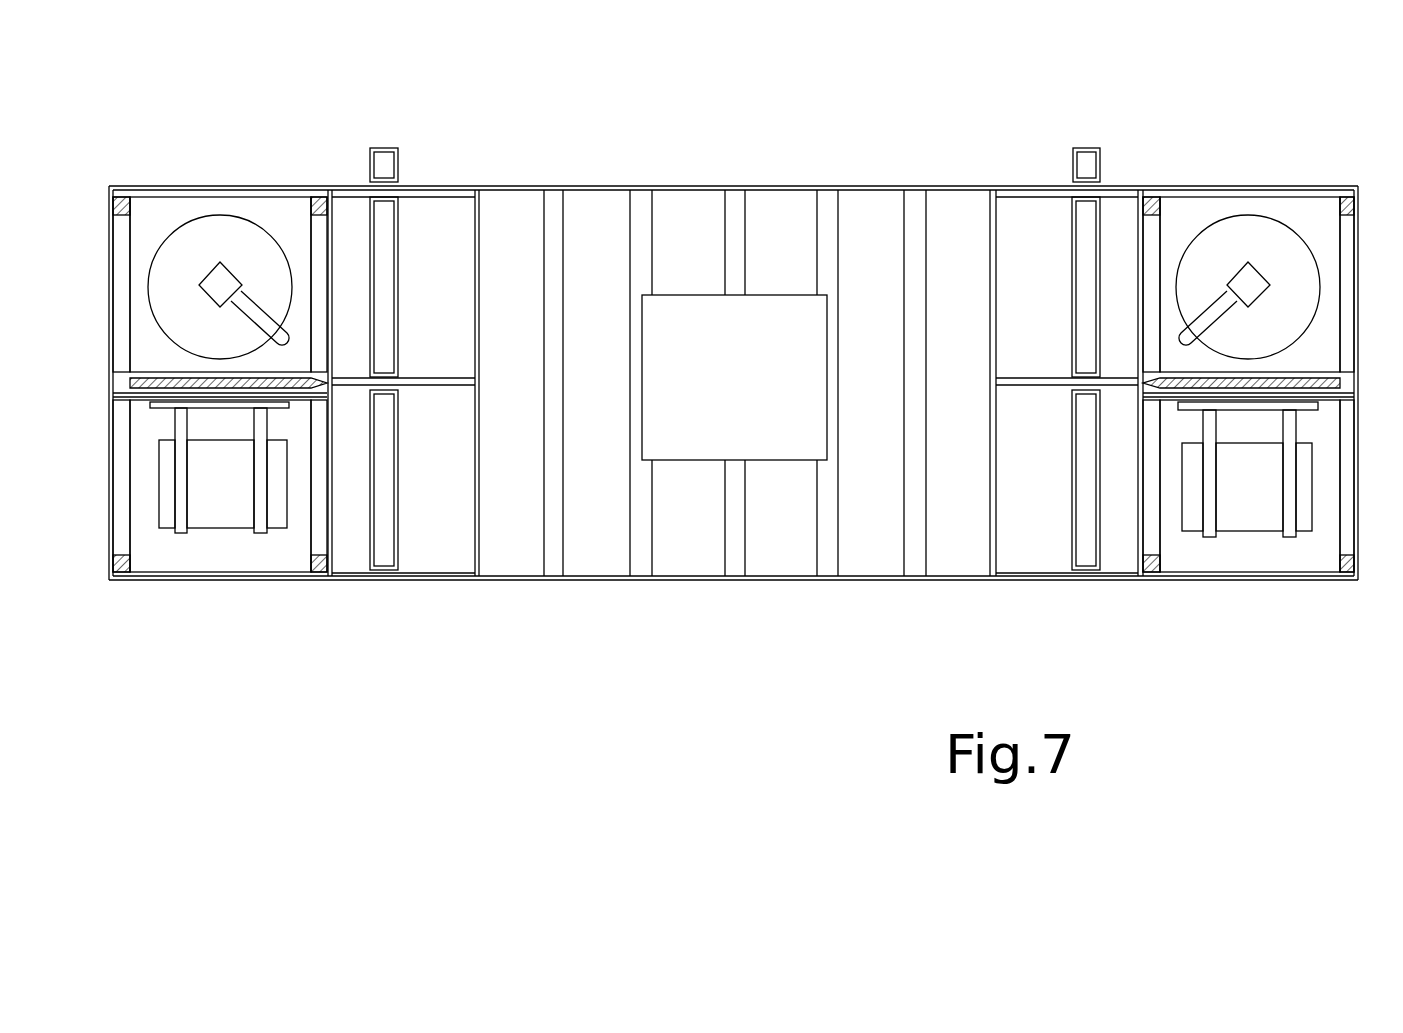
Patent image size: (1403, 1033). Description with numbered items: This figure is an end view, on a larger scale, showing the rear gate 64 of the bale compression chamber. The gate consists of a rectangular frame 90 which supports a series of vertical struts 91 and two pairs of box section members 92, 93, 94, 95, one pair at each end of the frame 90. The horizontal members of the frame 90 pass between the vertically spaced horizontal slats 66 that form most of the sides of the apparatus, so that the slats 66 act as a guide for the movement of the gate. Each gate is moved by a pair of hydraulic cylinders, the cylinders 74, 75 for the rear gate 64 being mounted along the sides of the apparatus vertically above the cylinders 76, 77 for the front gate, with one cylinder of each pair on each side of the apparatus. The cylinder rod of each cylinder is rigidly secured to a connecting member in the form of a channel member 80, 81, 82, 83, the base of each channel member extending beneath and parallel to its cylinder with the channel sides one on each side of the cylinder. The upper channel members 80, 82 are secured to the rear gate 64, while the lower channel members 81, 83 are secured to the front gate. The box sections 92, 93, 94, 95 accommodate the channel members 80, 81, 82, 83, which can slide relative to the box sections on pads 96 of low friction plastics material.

The rectangular frame 90 is at (706, 186).
The box section member 92 is at (108, 259).
The box section member 93 is at (107, 495).
The upper channel member 82 is at (1346, 334).
The lower channel member 83 is at (1345, 432).
The upper channel member 80 is at (136, 219).
The lower channel member 81 is at (138, 538).
The box section member 94 is at (1337, 195).
The box section member 95 is at (1337, 516).
The pad 96 is at (173, 378).
The hydraulic cylinder 74 is at (255, 242).
The hydraulic cylinder 75 is at (1287, 249).
The hydraulic cylinder 76 is at (257, 482).
The hydraulic cylinder 77 is at (1287, 490).
The horizontal slat 66 is at (403, 207).
The vertical strut 91 is at (737, 578).
The rear gate 64 is at (725, 256).